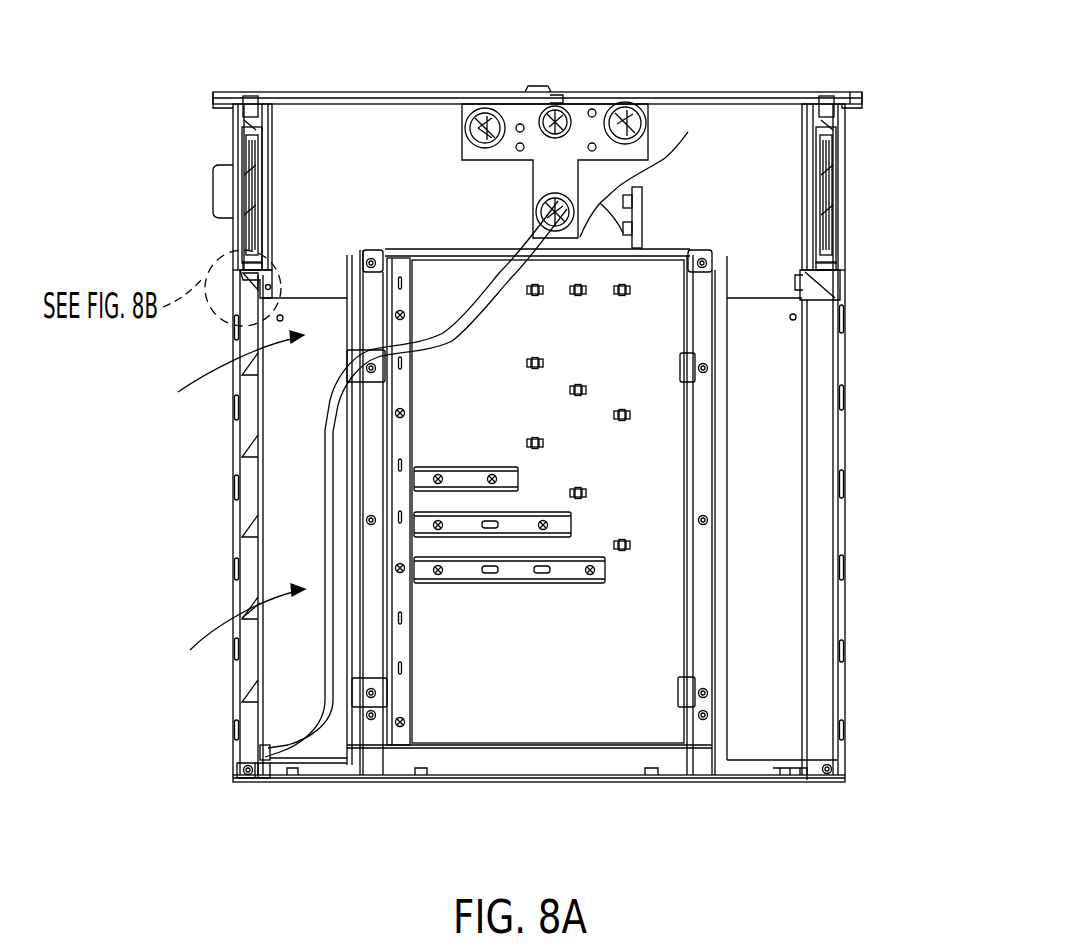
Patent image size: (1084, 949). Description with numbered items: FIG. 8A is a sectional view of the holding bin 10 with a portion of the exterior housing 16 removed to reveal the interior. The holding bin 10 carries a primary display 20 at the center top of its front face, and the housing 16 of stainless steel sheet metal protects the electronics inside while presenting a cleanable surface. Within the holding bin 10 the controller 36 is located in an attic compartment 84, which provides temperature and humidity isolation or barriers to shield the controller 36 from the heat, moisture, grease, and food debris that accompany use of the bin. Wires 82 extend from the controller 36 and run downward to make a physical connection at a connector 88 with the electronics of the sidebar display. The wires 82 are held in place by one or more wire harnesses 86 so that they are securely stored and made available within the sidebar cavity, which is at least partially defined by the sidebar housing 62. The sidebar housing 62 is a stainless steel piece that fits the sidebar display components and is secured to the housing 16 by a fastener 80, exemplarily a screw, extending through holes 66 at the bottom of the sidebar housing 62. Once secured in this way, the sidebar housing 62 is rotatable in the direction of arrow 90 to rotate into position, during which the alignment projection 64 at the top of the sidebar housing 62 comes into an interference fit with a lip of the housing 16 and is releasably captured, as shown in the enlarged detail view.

The holding bin 10 is at (878, 74).
The housing 16 is at (840, 377).
The primary display 20 is at (232, 127).
The controller 36 is at (645, 226).
The sidebar housing 62 is at (237, 690).
The alignment projection 64 is at (254, 278).
The holes 66 is at (236, 772).
The fastener 80 is at (245, 778).
The wires 82 is at (493, 313).
The attic compartment 84 is at (676, 160).
The wire harnesses 86 is at (413, 383).
The connector 88 is at (270, 770).
The arrow 90 is at (212, 372).